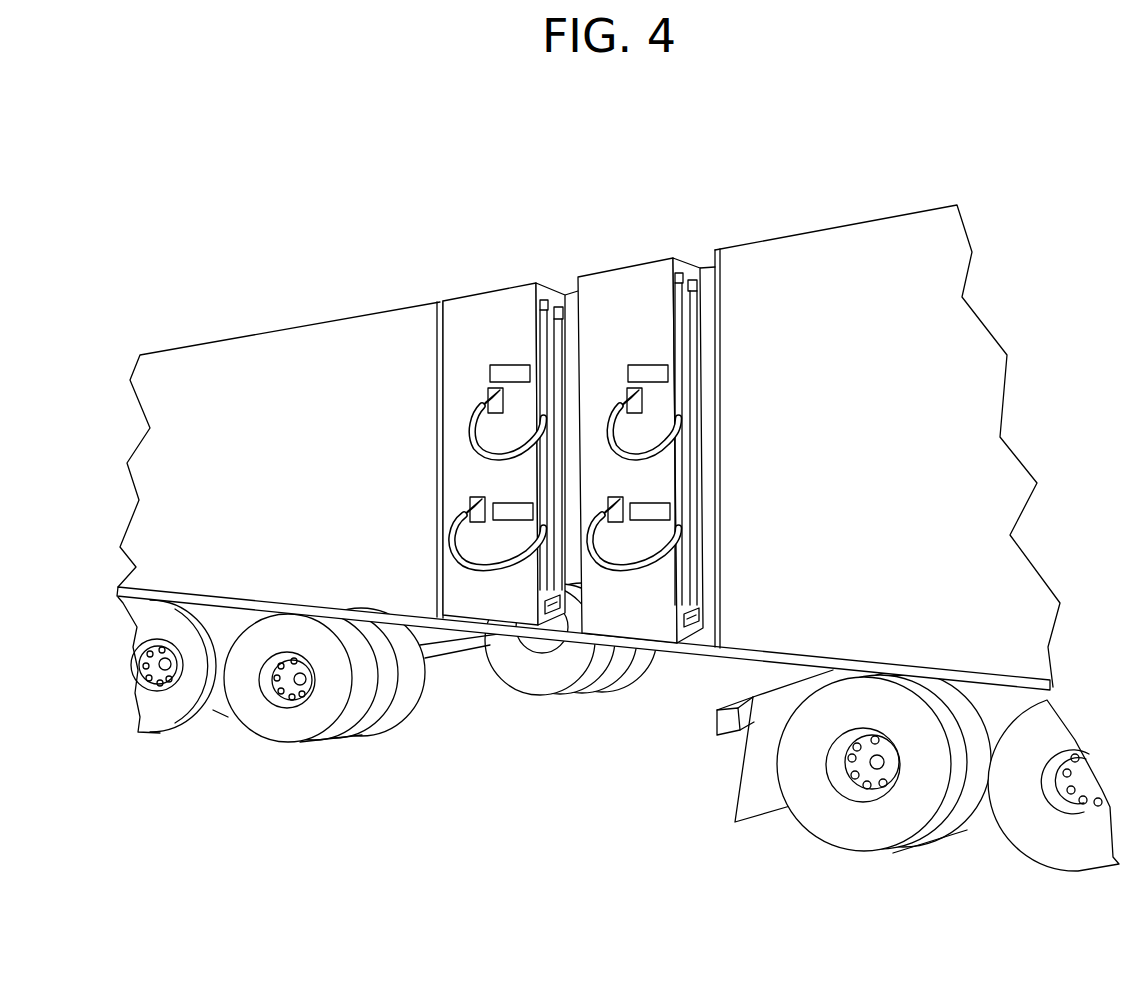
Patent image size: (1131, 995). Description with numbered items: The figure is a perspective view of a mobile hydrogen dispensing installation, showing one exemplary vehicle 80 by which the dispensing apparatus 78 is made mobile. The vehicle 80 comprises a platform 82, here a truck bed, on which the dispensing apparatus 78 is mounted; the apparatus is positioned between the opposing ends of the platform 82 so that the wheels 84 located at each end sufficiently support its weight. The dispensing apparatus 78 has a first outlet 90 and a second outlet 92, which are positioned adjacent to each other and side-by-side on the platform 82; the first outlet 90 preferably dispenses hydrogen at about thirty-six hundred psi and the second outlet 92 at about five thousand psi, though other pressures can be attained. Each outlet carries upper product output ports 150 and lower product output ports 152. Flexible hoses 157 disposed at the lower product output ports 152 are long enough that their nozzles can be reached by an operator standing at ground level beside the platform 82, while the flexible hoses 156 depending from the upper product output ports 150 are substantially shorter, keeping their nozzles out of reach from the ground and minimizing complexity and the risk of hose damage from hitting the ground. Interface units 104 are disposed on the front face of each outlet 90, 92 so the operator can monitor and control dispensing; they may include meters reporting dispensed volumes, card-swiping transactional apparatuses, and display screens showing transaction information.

The vehicle 80 is at (621, 143).
The dispensing apparatus 78 is at (485, 280).
The second outlet 92 is at (626, 275).
The first outlet 90 is at (448, 298).
The upper product output ports 150 is at (543, 300).
The lower product output ports 152 is at (556, 306).
The interface units 104 is at (490, 368).
The flexible hoses 156 is at (478, 396).
The flexible hoses 157 is at (460, 522).
The platform 82 is at (720, 660).
The wheels 84 is at (310, 747).